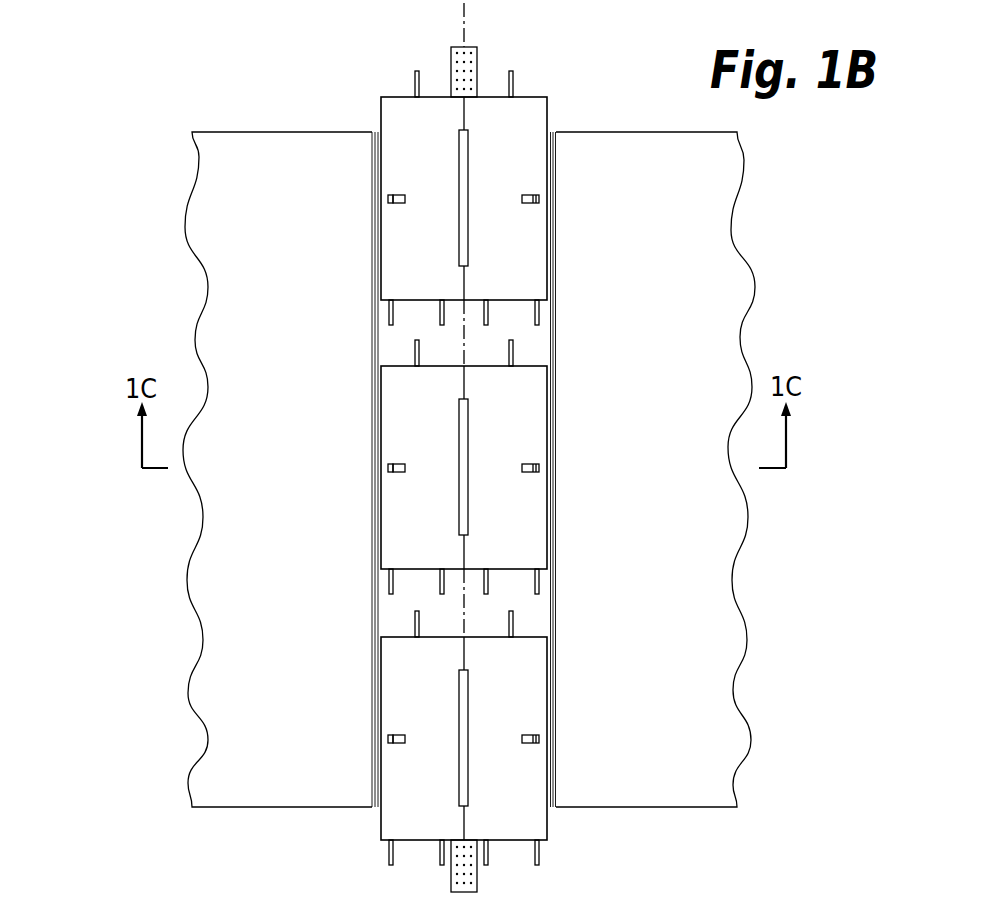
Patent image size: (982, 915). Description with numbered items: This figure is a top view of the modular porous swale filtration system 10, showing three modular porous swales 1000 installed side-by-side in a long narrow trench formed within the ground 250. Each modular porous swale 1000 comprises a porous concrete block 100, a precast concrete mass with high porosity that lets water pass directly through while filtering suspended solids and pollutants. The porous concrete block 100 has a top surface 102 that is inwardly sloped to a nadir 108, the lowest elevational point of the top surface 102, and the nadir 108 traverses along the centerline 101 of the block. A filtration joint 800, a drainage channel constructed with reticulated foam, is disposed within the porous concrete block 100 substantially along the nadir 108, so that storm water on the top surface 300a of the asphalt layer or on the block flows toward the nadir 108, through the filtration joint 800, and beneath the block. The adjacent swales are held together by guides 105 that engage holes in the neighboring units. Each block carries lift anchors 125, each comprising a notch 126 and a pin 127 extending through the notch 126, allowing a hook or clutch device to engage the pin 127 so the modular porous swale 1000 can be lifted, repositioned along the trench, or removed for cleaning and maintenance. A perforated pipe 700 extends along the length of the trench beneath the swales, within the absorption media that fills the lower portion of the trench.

The modular porous swale filtration system 10 is at (97, 159).
The ground 250 is at (220, 122).
The porous concrete block 100 is at (404, 120).
The centerline 101 is at (466, 12).
The modular porous swale 1000 is at (563, 106).
The filtration joint 800 is at (470, 153).
The nadir 108 is at (477, 283).
The pin 127 is at (391, 203).
The notch 126 is at (396, 194).
The lift anchor 125 is at (529, 217).
The top surface 102 is at (435, 265).
The guide 105 is at (389, 312).
The perforated pipe 700 is at (466, 893).
The top surface of the asphalt layer 300a is at (816, 903).